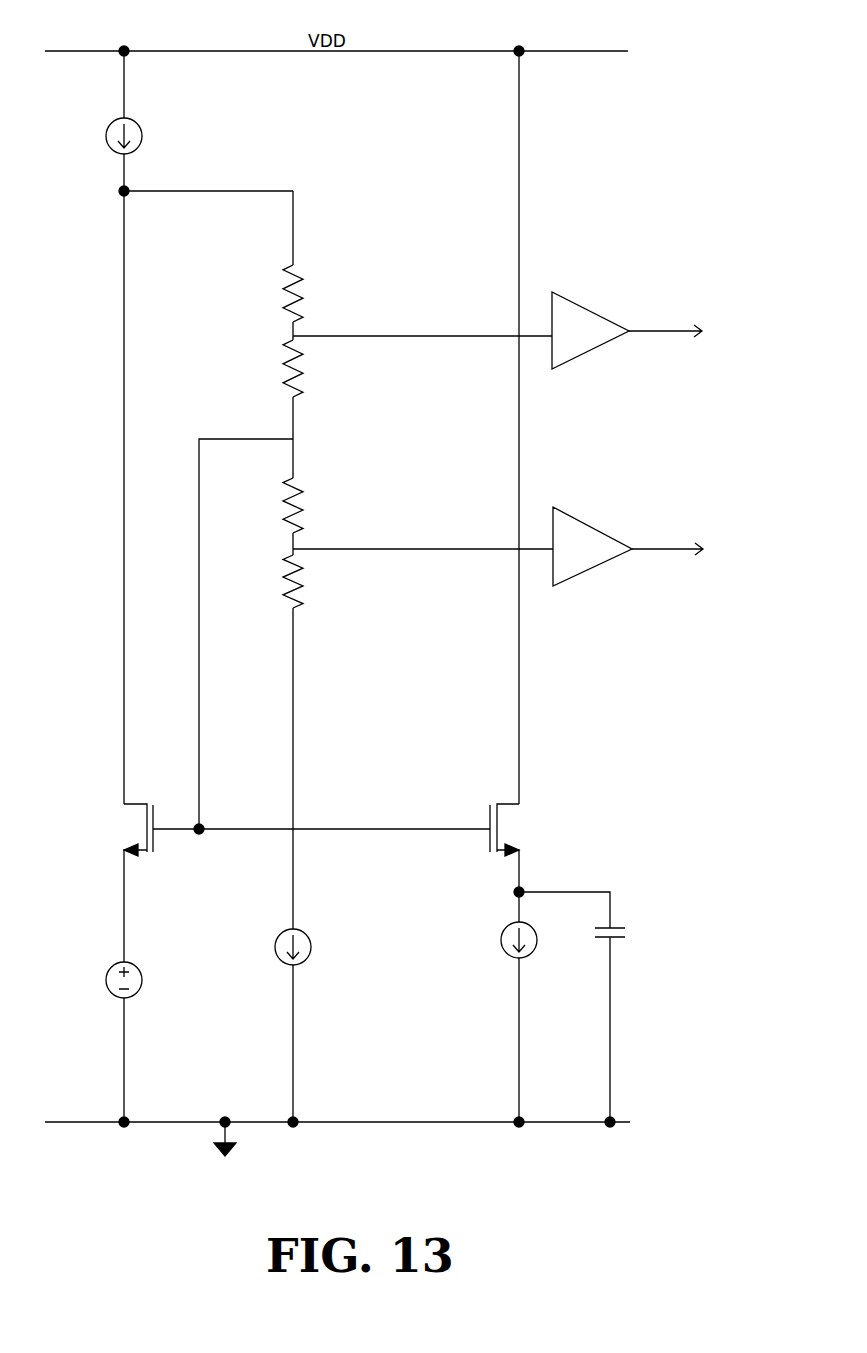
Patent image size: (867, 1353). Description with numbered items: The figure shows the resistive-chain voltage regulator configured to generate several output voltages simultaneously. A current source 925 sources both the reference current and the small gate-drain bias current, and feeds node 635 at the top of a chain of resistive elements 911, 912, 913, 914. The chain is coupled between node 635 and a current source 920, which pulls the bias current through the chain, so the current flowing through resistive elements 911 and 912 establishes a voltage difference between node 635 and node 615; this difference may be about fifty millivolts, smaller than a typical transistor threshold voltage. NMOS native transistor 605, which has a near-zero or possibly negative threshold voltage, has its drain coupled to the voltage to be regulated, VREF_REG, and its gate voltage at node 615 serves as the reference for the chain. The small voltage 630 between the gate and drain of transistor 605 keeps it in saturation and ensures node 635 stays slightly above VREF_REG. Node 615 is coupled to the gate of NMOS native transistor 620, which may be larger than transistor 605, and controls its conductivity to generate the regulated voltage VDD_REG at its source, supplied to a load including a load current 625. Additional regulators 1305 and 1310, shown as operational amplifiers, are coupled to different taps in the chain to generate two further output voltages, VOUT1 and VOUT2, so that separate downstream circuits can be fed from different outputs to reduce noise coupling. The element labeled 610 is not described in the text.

The current source 925 is at (164, 123).
The node 635 is at (182, 191).
The resistive element 911 is at (322, 293).
The resistive element 912 is at (322, 368).
The resistive element 913 is at (322, 505).
The resistive element 914 is at (322, 581).
The regulator 1305 is at (661, 330).
The regulator 1310 is at (662, 546).
The NMOS native transistor 605 is at (161, 883).
The node 615 is at (203, 834).
The NMOS native transistor 620 is at (488, 848).
The voltage source VREF_REG 610 is at (176, 1030).
The current source 920 is at (325, 937).
The load current 625 is at (537, 997).
The voltage source 630 is at (597, 1007).